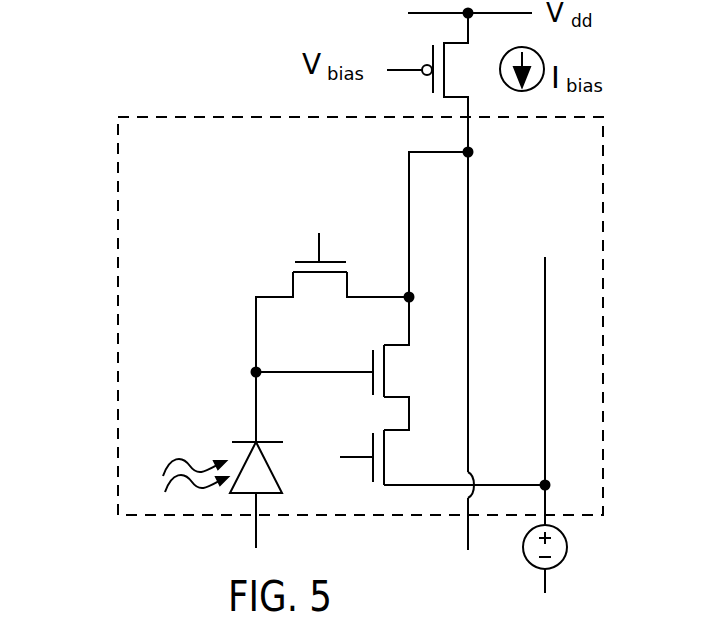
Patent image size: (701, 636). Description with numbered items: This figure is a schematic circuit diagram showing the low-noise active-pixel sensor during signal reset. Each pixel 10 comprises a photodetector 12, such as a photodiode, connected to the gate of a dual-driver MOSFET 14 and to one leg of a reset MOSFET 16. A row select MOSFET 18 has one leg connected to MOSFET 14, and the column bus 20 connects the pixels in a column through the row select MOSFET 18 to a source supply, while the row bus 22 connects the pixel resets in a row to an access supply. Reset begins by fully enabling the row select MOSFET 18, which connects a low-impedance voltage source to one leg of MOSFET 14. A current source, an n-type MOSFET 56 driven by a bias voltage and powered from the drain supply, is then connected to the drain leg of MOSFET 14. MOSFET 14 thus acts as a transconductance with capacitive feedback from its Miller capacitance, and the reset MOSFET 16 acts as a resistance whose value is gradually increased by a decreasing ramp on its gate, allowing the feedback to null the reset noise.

The pixel 10 is at (118, 160).
The photodetector 12 is at (238, 455).
The dual-driver MOSFET 14 is at (388, 368).
The reset MOSFET 16 is at (322, 275).
The row select MOSFET 18 is at (388, 452).
The column bus 20 is at (546, 390).
The row bus 22 is at (470, 130).
The n-type MOSFET 56 is at (452, 70).